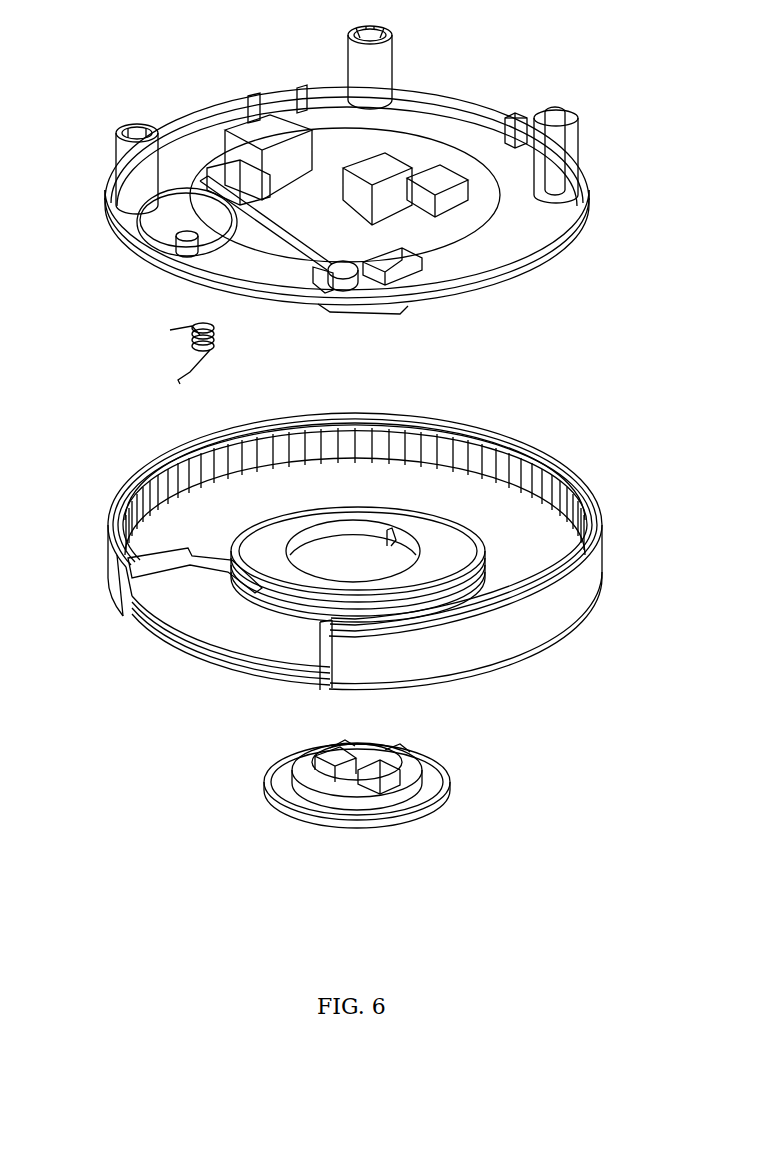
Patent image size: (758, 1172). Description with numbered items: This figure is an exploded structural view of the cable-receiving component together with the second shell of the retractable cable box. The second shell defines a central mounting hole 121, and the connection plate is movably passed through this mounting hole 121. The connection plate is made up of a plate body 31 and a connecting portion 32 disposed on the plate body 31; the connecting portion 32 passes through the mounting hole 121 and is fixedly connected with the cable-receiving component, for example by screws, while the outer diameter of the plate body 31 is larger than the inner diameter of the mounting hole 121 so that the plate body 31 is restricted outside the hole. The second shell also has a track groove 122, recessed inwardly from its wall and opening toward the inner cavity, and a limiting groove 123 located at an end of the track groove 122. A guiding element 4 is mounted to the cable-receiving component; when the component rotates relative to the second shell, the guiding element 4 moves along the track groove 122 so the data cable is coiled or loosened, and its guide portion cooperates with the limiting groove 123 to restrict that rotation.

The guiding element 4 is at (185, 347).
The mounting hole 121 is at (378, 543).
The track groove 122 is at (477, 560).
The limiting groove 123 is at (233, 553).
The plate body 31 is at (263, 782).
The connecting portion 32 is at (407, 778).